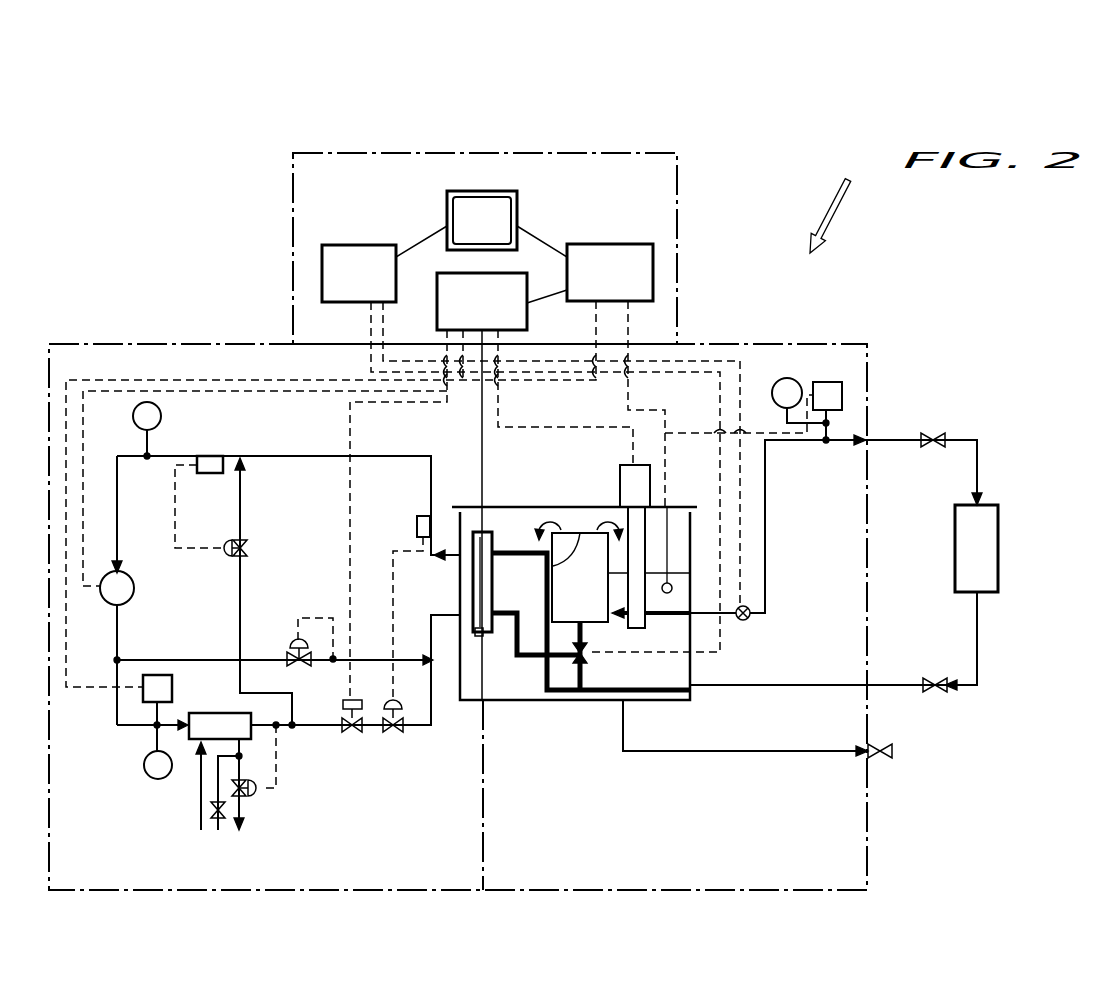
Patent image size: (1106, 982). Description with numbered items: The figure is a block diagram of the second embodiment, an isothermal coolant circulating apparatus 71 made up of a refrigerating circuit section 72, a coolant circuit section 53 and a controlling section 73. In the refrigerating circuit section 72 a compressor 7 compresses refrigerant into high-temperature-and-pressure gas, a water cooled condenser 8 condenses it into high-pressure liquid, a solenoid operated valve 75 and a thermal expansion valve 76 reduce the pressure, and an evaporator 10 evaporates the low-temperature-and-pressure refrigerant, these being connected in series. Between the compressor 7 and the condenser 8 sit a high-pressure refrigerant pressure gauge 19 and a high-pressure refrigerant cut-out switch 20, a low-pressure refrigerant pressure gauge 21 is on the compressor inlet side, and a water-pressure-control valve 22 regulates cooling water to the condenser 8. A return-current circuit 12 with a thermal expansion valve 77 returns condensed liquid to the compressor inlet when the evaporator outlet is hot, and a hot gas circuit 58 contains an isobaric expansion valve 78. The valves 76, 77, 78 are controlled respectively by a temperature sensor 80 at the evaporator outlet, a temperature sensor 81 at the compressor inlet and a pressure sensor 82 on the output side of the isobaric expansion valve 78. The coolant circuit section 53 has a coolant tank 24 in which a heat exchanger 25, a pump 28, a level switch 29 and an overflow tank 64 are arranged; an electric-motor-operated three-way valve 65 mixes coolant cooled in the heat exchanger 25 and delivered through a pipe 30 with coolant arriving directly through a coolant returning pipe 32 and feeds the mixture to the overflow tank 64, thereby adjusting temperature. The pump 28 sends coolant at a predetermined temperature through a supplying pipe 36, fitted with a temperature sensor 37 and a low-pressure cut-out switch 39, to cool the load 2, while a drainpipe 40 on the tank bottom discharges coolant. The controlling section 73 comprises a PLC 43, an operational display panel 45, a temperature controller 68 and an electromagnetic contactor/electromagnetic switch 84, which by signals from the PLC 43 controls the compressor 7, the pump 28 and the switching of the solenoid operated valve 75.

The load 2 is at (966, 562).
The compressor 7 is at (110, 604).
The condenser 8 is at (212, 713).
The evaporator 10 is at (468, 507).
The return-current circuit 12 is at (240, 625).
The high-pressure refrigerant pressure gauge 19 is at (144, 765).
The high-pressure refrigerant cut-out switch 20 is at (148, 690).
The low-pressure refrigerant pressure gauge 21 is at (133, 416).
The water-pressure-control valve 22 is at (258, 798).
The coolant tank 24 is at (583, 700).
The heat exchanger 25 is at (487, 640).
The pump 28 is at (625, 465).
The level switch 29 is at (672, 583).
The pipe 30 is at (527, 660).
The coolant returning pipe 32 is at (775, 689).
The supplying pipe 36 is at (765, 522).
The temperature sensor 37 is at (748, 621).
The low-pressure cut-out switch 39 is at (829, 382).
The drainpipe 40 is at (773, 754).
The PLC 43 is at (596, 287).
The operational display panel 45 is at (468, 235).
The coolant circuit section 53 is at (892, 346).
The hot gas circuit 58 is at (152, 659).
The overflow tank 64 is at (583, 507).
The electric-motor-operated three-way valve 65 is at (592, 658).
The temperature controller 68 is at (345, 289).
The isothermal coolant circulating apparatus 71 is at (839, 202).
The refrigerating circuit section 72 is at (62, 338).
The controlling section 73 is at (680, 244).
The solenoid operated valve 75 is at (352, 734).
The thermal expansion valve 76 is at (393, 734).
The thermal expansion valve 77 is at (230, 556).
The isobaric expansion valve 78 is at (295, 640).
The temperature sensor 80 is at (420, 516).
The temperature sensor 81 is at (212, 456).
The pressure sensor 82 is at (333, 665).
The electromagnetic contactor/electromagnetic switch 84 is at (468, 317).